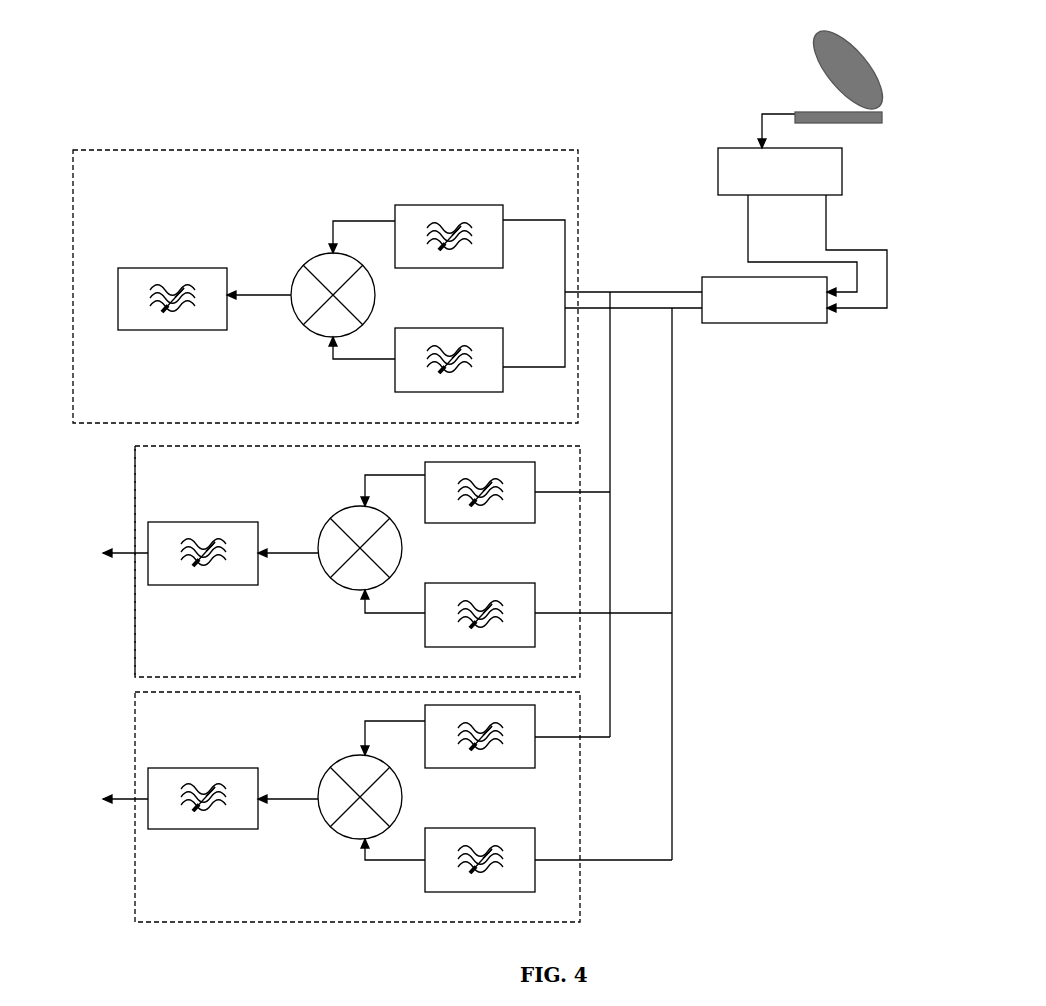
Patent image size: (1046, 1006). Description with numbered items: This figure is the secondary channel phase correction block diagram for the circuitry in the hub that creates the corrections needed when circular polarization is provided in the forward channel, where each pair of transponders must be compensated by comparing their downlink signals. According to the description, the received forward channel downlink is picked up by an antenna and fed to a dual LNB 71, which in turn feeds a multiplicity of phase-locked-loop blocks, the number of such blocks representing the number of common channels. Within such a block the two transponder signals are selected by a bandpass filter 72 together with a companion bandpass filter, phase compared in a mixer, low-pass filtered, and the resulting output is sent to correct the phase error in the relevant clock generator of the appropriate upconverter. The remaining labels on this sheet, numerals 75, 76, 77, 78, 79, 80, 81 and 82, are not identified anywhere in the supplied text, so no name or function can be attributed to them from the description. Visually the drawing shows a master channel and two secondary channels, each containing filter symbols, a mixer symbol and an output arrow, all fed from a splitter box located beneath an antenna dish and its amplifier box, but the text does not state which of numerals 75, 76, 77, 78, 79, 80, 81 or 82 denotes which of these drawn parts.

The dual LNB 71 is at (333, 184).
The bandpass filter 72 is at (148, 599).
The output filter 75 is at (148, 303).
The input band-pass filters 76 is at (487, 358).
The mixer 77 is at (318, 310).
The signal splitter 78 is at (765, 308).
The low noise amplifier 79 is at (810, 177).
The antenna 80 is at (825, 63).
The first secondary channel output 81 is at (148, 627).
The second secondary channel output 82 is at (195, 853).